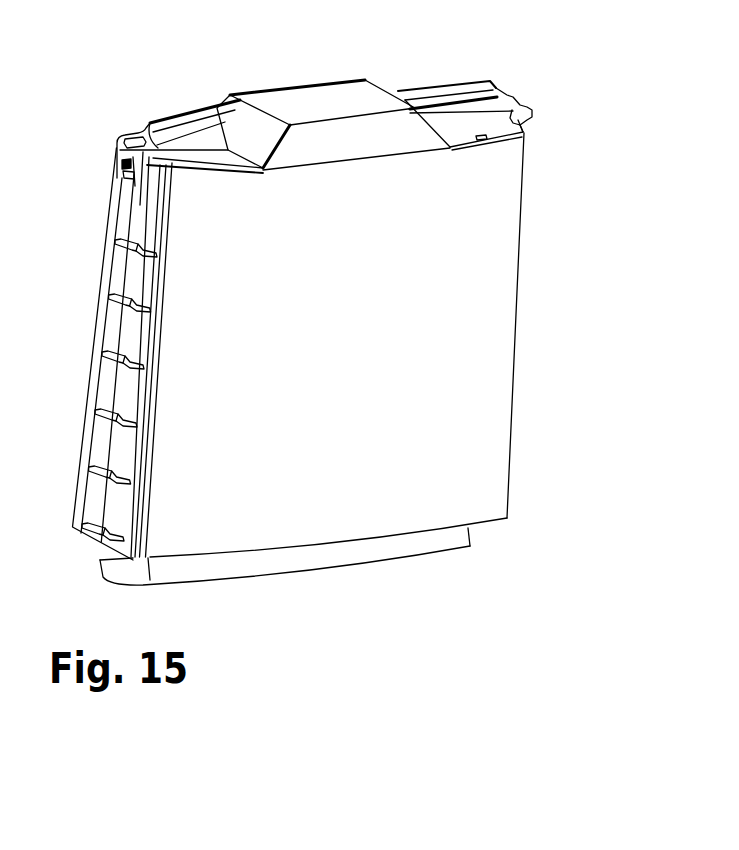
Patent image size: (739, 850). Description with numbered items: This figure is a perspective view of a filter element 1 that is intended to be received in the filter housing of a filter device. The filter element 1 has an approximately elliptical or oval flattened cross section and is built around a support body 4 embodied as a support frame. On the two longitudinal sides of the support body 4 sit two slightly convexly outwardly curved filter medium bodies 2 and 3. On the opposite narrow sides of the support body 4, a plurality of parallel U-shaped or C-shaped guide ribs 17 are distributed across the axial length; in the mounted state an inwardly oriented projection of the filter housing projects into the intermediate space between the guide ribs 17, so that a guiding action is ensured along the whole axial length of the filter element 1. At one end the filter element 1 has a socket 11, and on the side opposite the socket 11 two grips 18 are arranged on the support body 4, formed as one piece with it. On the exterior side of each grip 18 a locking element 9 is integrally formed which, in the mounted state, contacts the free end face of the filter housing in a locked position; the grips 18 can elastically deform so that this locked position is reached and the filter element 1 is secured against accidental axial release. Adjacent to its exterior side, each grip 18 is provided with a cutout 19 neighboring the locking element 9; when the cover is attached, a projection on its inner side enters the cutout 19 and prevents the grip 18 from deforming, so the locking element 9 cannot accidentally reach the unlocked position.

The filter element 1 is at (178, 76).
The filter medium body 2 is at (310, 88).
The filter medium body 3 is at (508, 255).
The support body 4 is at (114, 335).
The locking element 9 is at (124, 173).
The socket 11 is at (432, 547).
The guide ribs 17 is at (110, 363).
The grips 18 is at (180, 119).
The cutout 19 is at (140, 149).